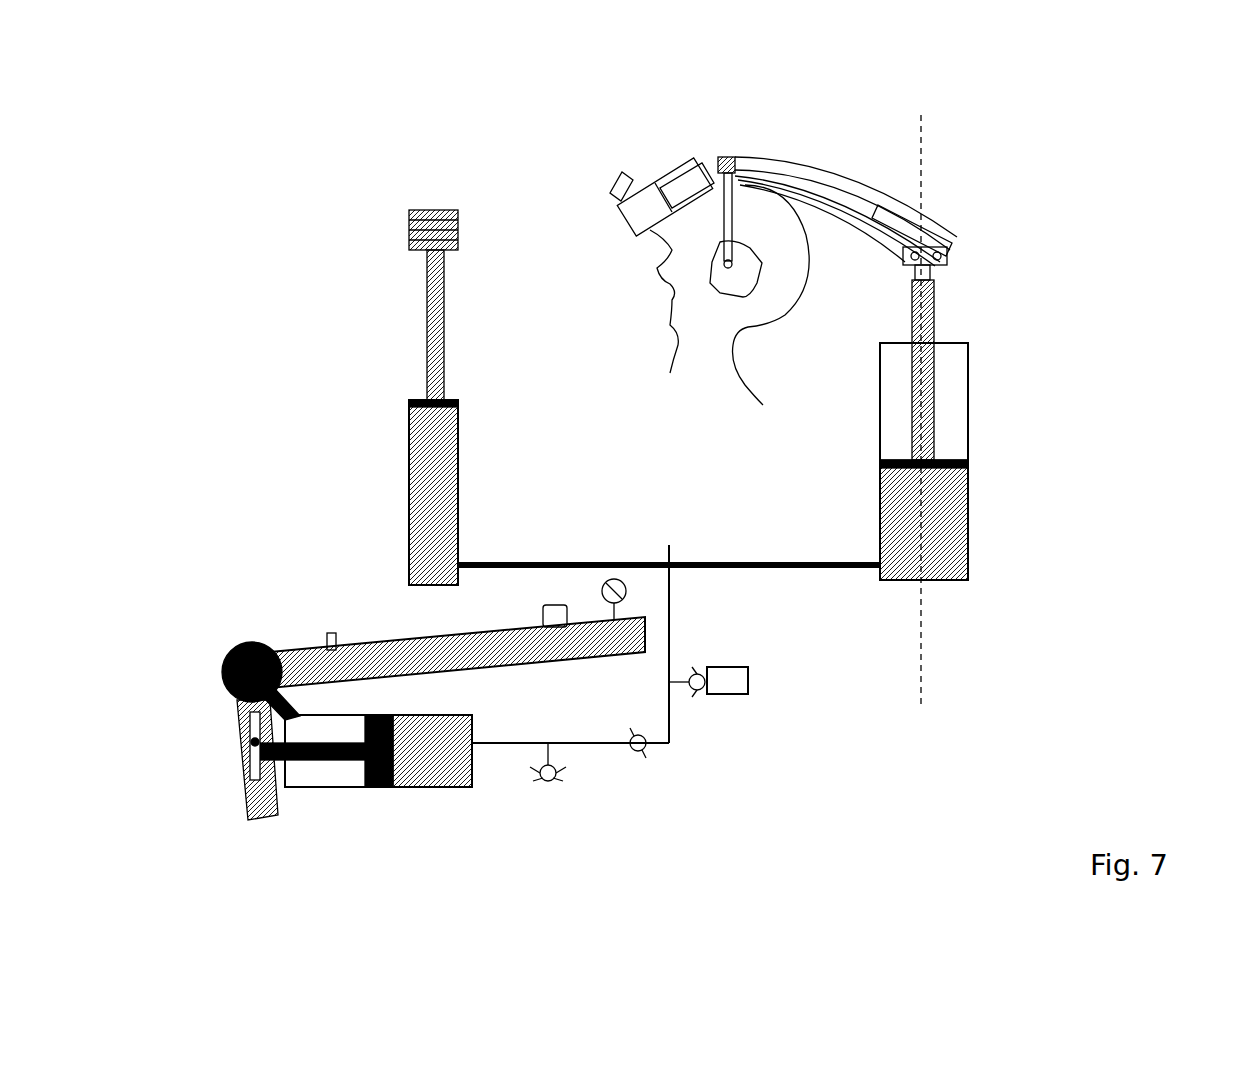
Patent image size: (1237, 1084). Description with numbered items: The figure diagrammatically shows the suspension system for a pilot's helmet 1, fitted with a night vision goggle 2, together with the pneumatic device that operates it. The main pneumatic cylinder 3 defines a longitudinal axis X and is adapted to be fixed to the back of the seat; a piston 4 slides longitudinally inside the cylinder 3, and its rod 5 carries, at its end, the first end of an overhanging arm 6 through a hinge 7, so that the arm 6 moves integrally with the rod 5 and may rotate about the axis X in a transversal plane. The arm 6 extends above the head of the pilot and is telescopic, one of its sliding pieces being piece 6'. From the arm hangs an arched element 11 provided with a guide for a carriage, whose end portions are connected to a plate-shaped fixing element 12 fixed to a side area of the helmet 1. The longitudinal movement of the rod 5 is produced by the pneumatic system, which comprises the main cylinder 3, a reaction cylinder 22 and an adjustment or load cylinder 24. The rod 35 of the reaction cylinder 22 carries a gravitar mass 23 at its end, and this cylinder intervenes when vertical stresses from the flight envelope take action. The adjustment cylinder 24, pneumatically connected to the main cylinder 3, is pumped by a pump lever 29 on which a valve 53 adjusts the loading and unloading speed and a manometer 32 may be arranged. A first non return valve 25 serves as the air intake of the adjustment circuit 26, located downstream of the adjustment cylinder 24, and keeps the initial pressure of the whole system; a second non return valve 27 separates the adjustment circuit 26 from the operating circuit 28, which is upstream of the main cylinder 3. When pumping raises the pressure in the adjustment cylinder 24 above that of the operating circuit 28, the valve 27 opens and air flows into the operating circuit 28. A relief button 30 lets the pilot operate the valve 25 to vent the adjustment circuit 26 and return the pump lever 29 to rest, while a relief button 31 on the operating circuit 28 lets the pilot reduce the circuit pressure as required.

The helmet 1 is at (681, 318).
The night vision goggle 2 is at (648, 208).
The pneumatic cylinder 3 is at (1055, 430).
The piston 4 is at (972, 457).
The rod 5 is at (937, 312).
The arm 6 is at (846, 153).
The piece of the telescopic arm 6' is at (837, 177).
The hinge 7 is at (950, 250).
The arched element 11 is at (723, 240).
The fixing element 12 is at (735, 275).
The reaction cylinder 22 is at (315, 357).
The mass 23 is at (423, 228).
The adjustment cylinder 24 is at (380, 822).
The first non return valve 25 is at (548, 783).
The adjustment circuit 26 is at (586, 747).
The second non return valve 27 is at (645, 750).
The operating circuit 28 is at (672, 708).
The pump lever 29 is at (383, 662).
The relief button 30 is at (548, 605).
The relief button 31 is at (750, 683).
The manometer 32 is at (610, 578).
The rod 35 is at (432, 338).
The valve 53 is at (327, 632).
The longitudinal axis X is at (925, 168).